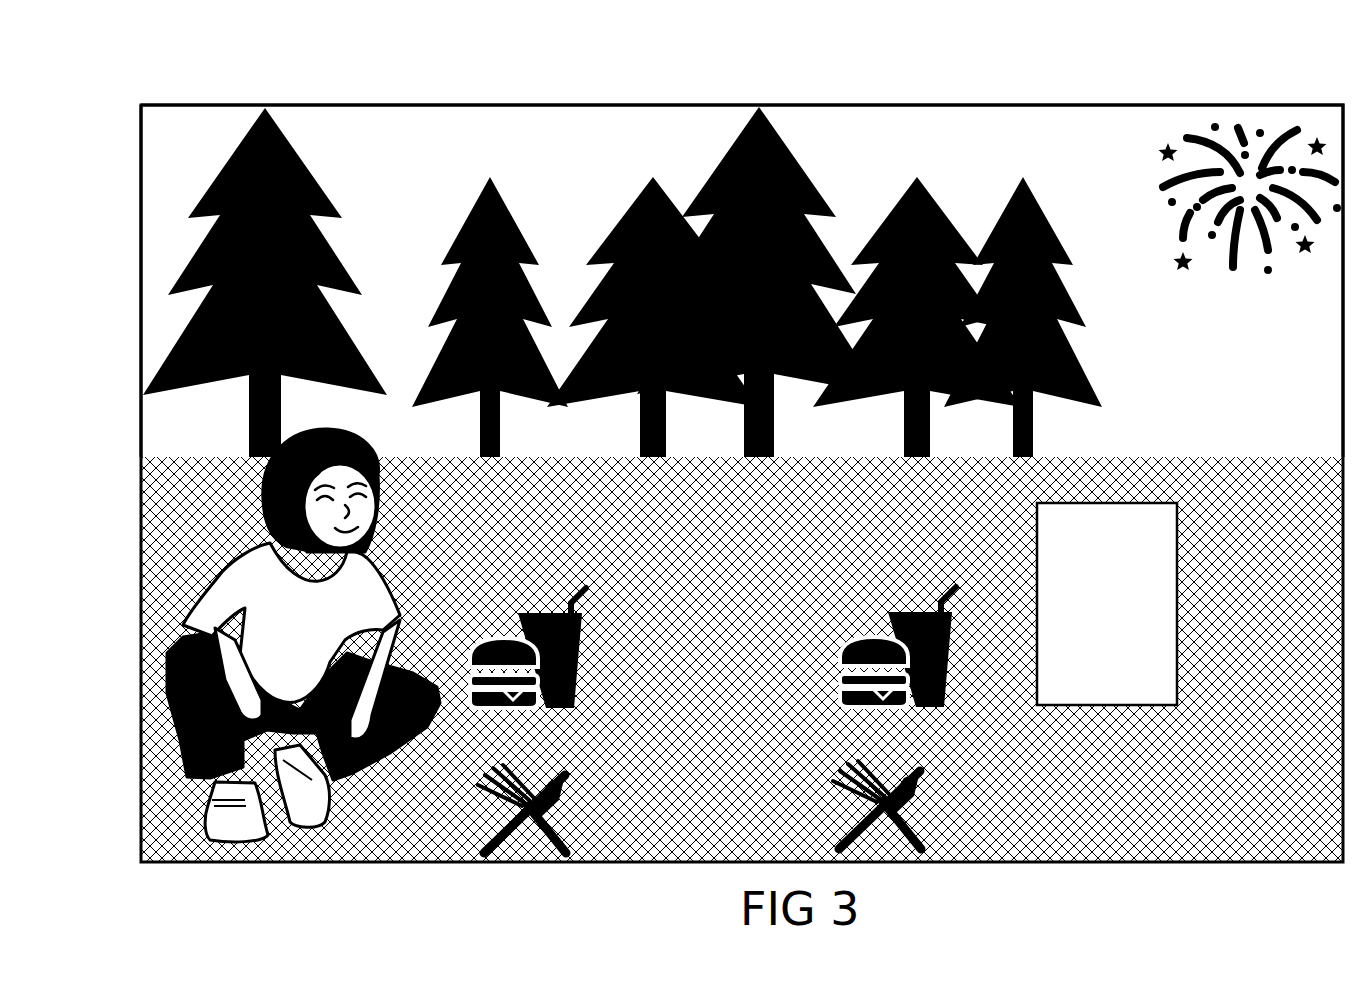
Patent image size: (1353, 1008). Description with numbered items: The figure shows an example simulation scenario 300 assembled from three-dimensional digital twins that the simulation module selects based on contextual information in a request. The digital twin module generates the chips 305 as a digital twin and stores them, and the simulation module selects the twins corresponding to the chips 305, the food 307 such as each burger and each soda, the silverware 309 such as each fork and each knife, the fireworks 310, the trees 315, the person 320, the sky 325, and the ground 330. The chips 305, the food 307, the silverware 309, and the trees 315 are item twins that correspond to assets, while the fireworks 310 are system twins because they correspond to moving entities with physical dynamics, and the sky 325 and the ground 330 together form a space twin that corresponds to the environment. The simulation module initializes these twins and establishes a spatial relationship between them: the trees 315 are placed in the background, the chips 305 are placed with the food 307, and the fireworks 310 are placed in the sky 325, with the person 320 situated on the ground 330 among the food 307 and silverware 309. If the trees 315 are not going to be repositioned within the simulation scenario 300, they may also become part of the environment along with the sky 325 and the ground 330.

The simulation scenario 300 is at (110, 58).
The chips 305 is at (1177, 585).
The food 307 is at (580, 632).
The silverware 309 is at (566, 777).
The fireworks 310 is at (1268, 287).
The trees 315 is at (1098, 400).
The person 320 is at (378, 585).
The sky 325 is at (1093, 127).
The ground 330 is at (1140, 828).